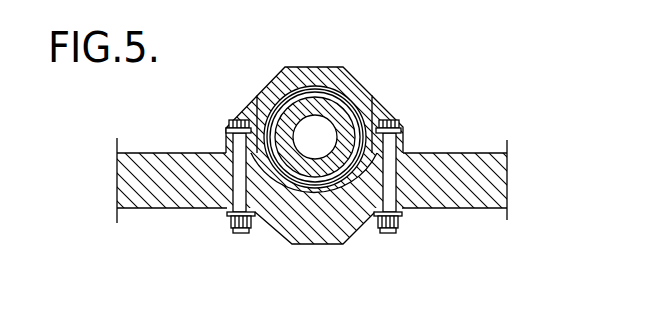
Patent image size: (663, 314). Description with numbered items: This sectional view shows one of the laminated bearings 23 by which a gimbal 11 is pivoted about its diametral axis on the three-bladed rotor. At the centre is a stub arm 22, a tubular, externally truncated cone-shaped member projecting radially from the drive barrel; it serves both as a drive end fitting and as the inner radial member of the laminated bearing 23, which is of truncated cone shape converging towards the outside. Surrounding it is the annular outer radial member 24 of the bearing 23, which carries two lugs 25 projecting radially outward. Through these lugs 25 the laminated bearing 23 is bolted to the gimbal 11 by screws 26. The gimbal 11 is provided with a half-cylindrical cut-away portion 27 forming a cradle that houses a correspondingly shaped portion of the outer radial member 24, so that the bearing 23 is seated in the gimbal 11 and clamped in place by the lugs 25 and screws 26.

The gimbal 11 is at (470, 185).
The stub arm 22 is at (292, 115).
The laminated bearing 23 is at (340, 92).
The outer radial member 24 is at (360, 97).
The lug 25 is at (227, 139).
The screw 26 is at (238, 194).
The half-cylindrical cut-away portion 27 is at (315, 193).